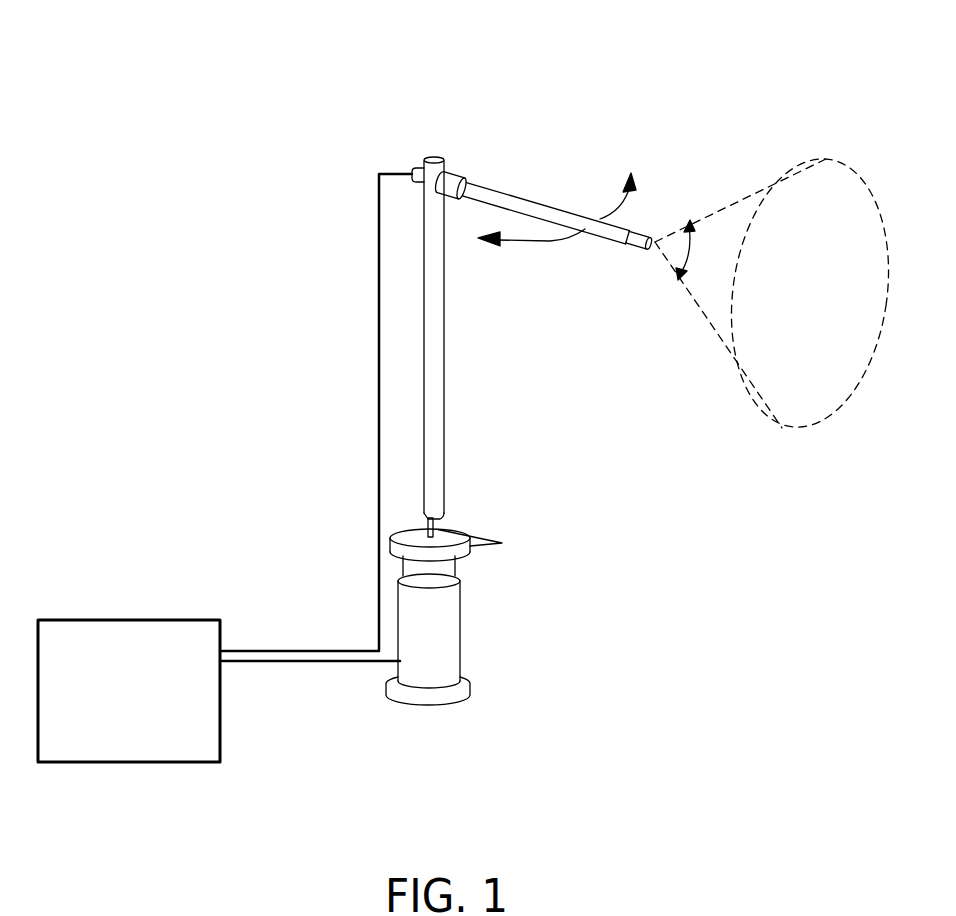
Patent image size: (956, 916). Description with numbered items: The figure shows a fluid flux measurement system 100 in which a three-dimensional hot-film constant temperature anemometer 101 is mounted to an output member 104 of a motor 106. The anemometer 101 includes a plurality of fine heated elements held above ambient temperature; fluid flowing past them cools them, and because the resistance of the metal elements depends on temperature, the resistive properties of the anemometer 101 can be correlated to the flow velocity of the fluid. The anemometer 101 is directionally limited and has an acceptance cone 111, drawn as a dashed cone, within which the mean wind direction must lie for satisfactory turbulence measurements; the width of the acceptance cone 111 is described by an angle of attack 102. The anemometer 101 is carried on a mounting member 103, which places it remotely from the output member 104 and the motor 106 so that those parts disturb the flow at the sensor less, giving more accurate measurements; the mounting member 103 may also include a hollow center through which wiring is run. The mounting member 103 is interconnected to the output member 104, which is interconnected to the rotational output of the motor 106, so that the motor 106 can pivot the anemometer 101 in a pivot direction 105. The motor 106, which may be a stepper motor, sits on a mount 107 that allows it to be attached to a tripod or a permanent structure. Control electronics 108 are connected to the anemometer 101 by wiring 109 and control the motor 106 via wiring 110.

The fluid flux measurement system 100 is at (382, 100).
The three-dimensional hot-film constant temperature anemometer 101 is at (643, 233).
The angle of attack 102 is at (687, 258).
The mounting member 103 is at (538, 203).
The output member 104 is at (444, 397).
The pivot direction 105 is at (541, 242).
The motor 106 is at (460, 640).
The mount 107 is at (480, 537).
The control electronics 108 is at (153, 712).
The wiring 109 is at (275, 650).
The wiring 110 is at (245, 664).
The acceptance cone 111 is at (852, 166).